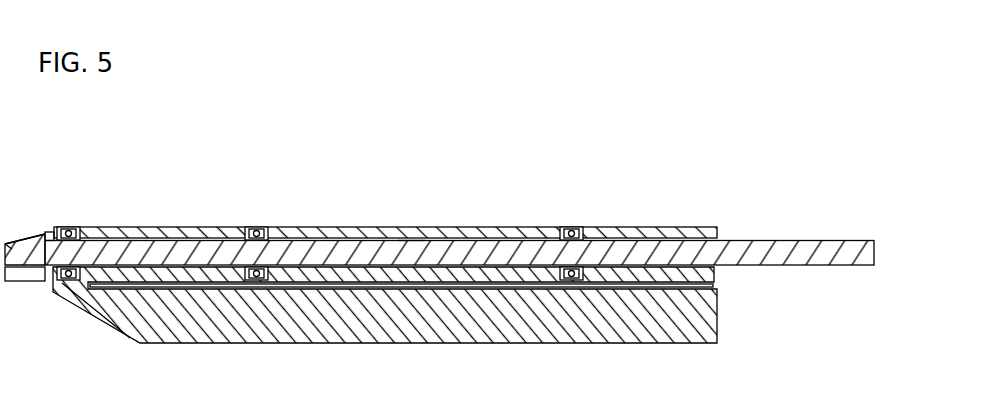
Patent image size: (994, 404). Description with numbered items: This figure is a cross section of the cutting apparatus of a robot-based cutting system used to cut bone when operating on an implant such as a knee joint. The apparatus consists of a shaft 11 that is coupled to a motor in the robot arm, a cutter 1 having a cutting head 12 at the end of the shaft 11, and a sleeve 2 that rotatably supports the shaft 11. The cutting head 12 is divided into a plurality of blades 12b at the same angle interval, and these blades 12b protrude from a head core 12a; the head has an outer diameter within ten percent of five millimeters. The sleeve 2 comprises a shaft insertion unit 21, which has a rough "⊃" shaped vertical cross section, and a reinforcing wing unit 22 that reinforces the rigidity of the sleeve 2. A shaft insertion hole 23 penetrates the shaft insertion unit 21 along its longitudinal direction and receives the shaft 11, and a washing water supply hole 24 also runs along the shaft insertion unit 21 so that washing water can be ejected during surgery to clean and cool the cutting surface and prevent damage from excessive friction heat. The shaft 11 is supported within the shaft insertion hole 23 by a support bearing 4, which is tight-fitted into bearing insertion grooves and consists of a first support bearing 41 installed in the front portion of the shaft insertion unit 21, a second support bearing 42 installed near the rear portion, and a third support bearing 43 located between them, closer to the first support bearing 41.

The cutter 1 is at (439, 270).
The shaft 11 is at (82, 250).
The cutting head 12 is at (51, 254).
The head core 12a is at (15, 240).
The blades 12b is at (43, 230).
The sleeve 2 is at (415, 264).
The shaft insertion unit 21 is at (678, 230).
The reinforcing wing unit 22 is at (702, 327).
The shaft insertion hole 23 is at (406, 238).
The washing water supply hole 24 is at (157, 287).
The support bearing 4 is at (357, 216).
The first support bearing 41 is at (75, 230).
The second support bearing 42 is at (580, 230).
The third support bearing 43 is at (263, 228).